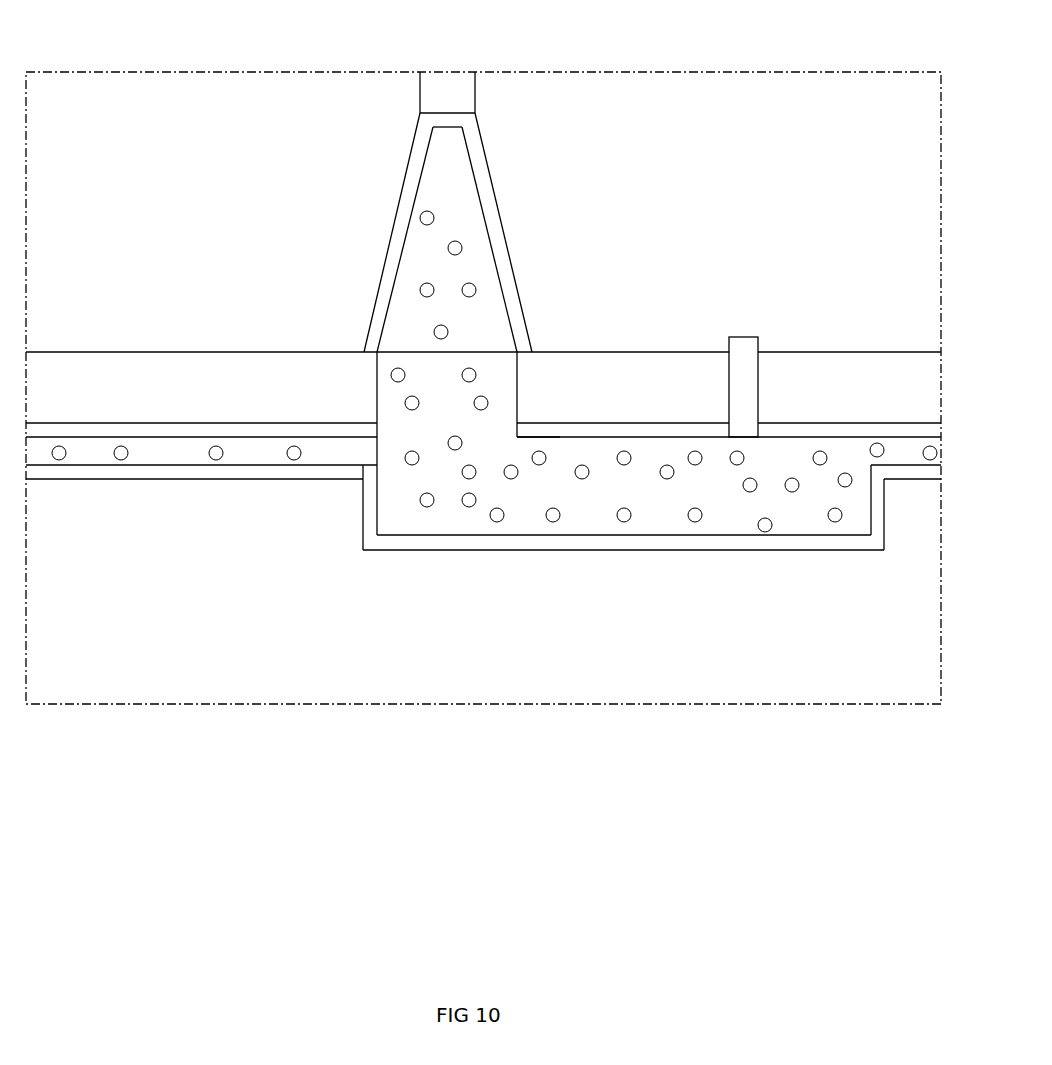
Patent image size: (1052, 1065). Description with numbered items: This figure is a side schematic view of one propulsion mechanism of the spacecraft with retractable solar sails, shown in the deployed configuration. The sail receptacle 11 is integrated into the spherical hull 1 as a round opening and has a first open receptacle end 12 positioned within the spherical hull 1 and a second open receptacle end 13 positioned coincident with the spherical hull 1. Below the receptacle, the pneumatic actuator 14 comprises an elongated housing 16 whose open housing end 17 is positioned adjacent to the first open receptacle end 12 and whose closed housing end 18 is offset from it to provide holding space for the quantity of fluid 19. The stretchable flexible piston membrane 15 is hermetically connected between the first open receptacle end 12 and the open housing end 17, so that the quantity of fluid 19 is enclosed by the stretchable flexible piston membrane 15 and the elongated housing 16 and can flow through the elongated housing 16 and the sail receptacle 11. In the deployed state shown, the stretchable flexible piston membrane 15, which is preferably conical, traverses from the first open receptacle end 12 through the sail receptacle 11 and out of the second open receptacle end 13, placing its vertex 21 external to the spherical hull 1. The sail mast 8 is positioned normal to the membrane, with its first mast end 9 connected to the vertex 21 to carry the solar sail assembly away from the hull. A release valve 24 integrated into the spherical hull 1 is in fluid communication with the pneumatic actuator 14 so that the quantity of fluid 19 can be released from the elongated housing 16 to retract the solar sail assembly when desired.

The spherical hull 1 is at (226, 360).
The sail mast 8 is at (446, 80).
The first mast end 9 is at (436, 109).
The vertex 21 is at (470, 115).
The stretchable flexible piston membrane 15 is at (493, 222).
The quantity of fluid 19 is at (469, 290).
The release valve 24 is at (744, 337).
The sail receptacle 11 is at (384, 383).
The second open receptacle end 13 is at (508, 355).
The first open receptacle end 12 is at (510, 421).
The open housing end 17 is at (401, 431).
The elongated housing 16 is at (637, 536).
The closed housing end 18 is at (877, 490).
The pneumatic actuator 14 is at (463, 603).